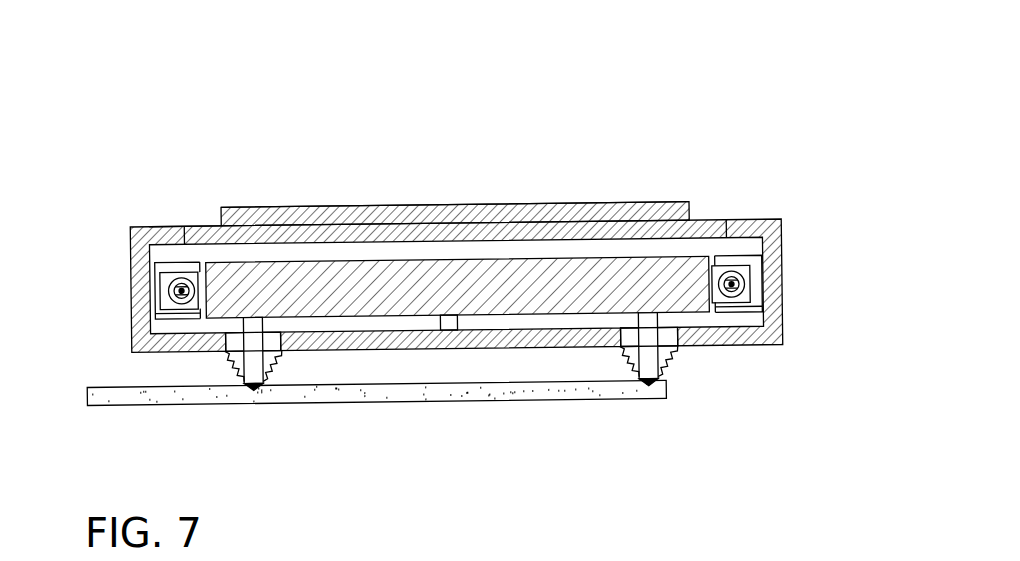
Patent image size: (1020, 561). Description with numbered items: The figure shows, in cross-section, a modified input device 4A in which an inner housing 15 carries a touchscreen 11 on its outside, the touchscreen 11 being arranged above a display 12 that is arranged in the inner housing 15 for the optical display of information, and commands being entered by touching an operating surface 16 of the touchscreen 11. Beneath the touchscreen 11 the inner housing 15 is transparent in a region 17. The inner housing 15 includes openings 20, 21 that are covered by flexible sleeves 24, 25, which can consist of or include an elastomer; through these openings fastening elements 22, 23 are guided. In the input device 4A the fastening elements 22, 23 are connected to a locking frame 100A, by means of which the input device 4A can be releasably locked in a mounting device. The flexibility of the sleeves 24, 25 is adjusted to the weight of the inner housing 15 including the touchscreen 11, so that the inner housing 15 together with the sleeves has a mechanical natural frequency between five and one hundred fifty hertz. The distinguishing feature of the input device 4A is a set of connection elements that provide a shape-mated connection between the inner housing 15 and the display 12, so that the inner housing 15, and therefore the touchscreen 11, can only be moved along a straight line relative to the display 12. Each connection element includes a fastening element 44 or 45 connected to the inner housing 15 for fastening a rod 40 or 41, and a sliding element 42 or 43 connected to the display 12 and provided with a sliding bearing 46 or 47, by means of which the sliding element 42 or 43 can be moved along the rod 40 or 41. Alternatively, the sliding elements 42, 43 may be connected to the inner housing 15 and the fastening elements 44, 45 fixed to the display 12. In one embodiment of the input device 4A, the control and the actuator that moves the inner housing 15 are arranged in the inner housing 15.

The input device 4A is at (807, 125).
The touchscreen 11 is at (401, 213).
The display 12 is at (492, 275).
The inner housing 15 is at (762, 222).
The operating surface 16 is at (293, 206).
The region beneath touchscreen 17 is at (203, 223).
The opening 20 is at (270, 342).
The opening 21 is at (666, 339).
The fastening element 22 is at (248, 364).
The fastening element 23 is at (645, 362).
The flexible sleeve 24 is at (255, 391).
The flexible sleeve 25 is at (650, 387).
The rod 40 is at (181, 288).
The rod 41 is at (733, 286).
The sliding element 42 is at (165, 303).
The sliding element 43 is at (746, 300).
The fastening element 44 is at (168, 314).
The fastening element 45 is at (740, 310).
The sliding bearing 46 is at (167, 273).
The sliding bearing 47 is at (762, 256).
The locking frame 100A is at (460, 392).